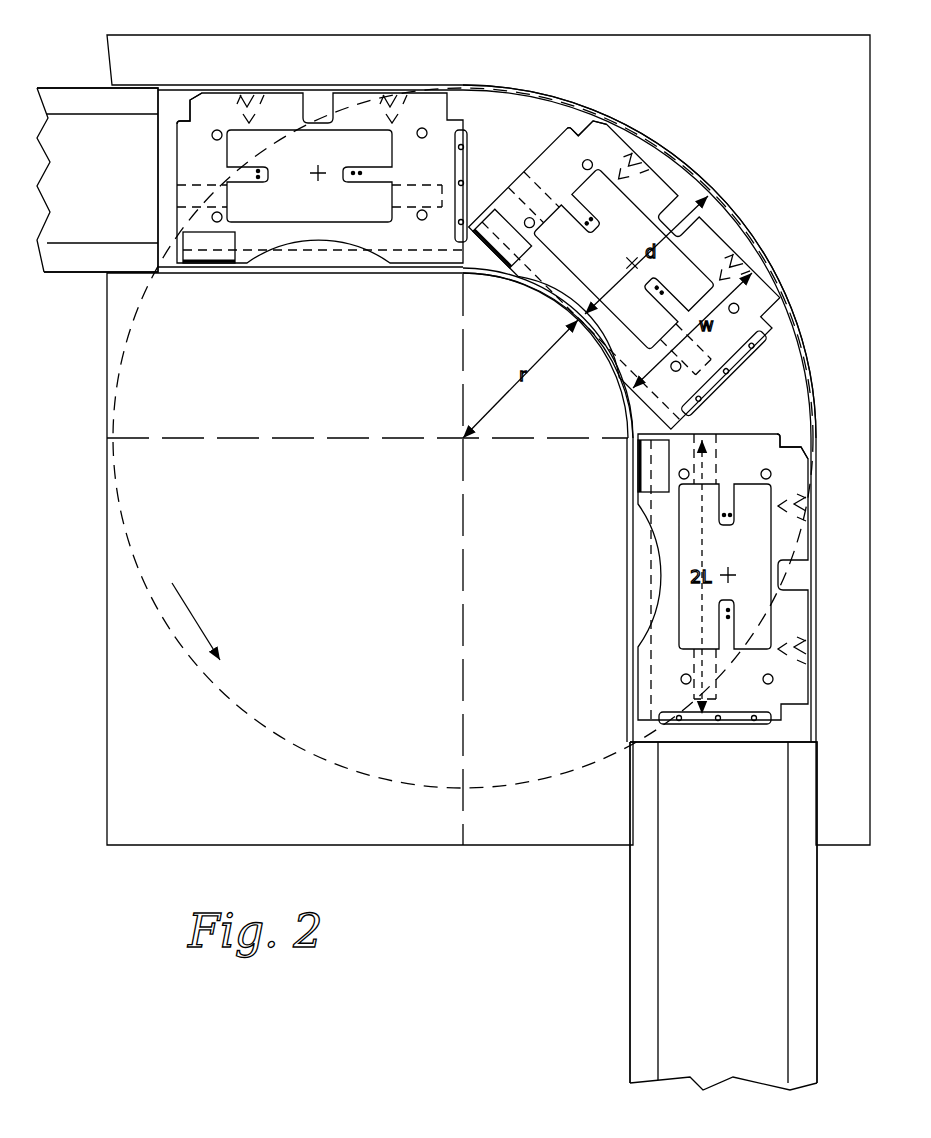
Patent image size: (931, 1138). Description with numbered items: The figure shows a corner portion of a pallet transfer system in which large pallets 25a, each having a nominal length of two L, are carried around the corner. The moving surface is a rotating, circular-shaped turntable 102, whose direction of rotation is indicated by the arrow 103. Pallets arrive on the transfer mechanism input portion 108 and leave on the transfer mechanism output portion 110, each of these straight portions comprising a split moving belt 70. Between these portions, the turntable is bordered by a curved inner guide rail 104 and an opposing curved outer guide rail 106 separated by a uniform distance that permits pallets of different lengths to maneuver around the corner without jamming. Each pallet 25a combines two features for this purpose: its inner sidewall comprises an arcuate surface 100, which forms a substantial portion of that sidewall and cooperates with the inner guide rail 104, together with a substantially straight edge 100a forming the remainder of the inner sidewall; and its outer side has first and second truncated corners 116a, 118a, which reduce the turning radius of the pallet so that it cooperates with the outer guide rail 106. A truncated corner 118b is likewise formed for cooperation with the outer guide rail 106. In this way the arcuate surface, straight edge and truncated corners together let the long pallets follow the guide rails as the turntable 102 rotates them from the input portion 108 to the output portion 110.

The split moving belt 70 is at (80, 110).
The arcuate surface 100 is at (328, 273).
The substantially straight edge 100a is at (222, 273).
The turntable 102 is at (377, 703).
The arrow 103 is at (182, 600).
The inner guide rail 104 is at (539, 290).
The outer guide rail 106 is at (722, 196).
The transfer mechanism input portion 108 is at (745, 797).
The transfer mechanism output portion 110 is at (120, 217).
The truncated corner 116a is at (192, 100).
The truncated corner 118a is at (455, 120).
The truncated corner 118b is at (806, 700).
The pallet 25a is at (426, 100).